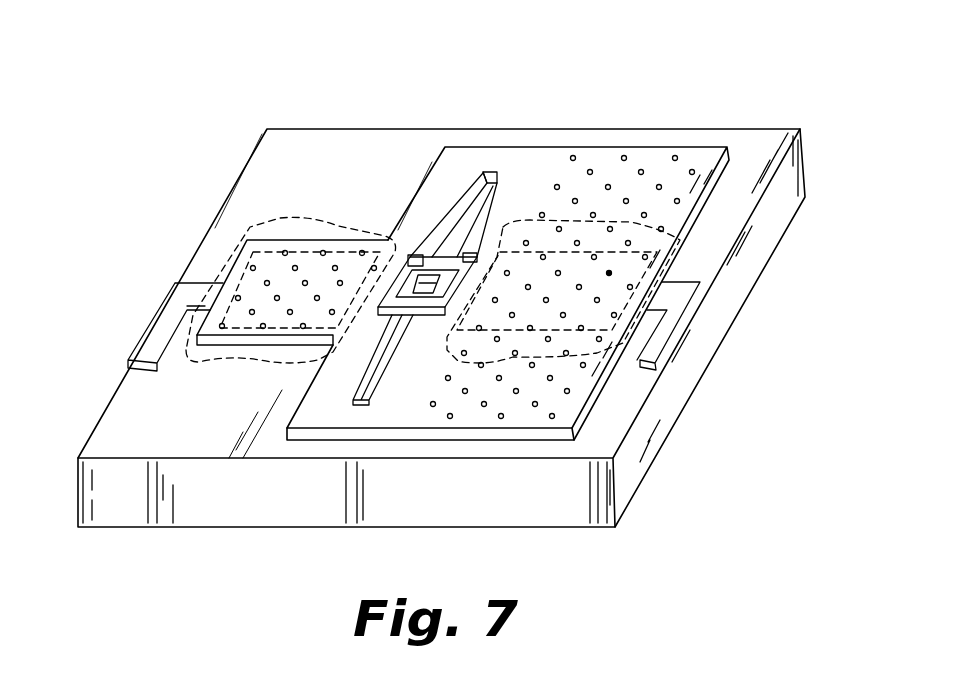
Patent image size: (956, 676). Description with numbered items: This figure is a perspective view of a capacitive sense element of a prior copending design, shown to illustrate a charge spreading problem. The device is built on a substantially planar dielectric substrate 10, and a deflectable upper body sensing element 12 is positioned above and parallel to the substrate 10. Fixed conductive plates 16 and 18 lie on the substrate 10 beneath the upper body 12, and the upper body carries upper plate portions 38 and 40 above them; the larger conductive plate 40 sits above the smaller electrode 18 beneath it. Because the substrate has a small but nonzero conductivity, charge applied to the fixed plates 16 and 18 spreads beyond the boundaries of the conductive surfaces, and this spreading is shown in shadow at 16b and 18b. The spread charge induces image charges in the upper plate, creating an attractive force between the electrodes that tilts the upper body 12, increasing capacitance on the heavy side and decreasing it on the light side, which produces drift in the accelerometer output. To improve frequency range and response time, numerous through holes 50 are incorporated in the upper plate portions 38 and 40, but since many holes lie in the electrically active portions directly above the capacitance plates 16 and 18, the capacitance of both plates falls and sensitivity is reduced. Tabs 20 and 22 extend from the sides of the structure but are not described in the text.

The substrate 10 is at (637, 457).
The upper body sensing element 12 is at (331, 446).
The fixed conductive plate 16 is at (287, 277).
The charge spreading region 16b is at (252, 226).
The fixed conductive plate 18 is at (560, 291).
The charge spreading region 18b is at (648, 234).
The right contact tab 20 is at (665, 330).
The left contact tab 22 is at (178, 303).
The upper plate portion 38 is at (330, 222).
The upper plate portion 40 is at (544, 140).
The through holes 50 is at (674, 156).